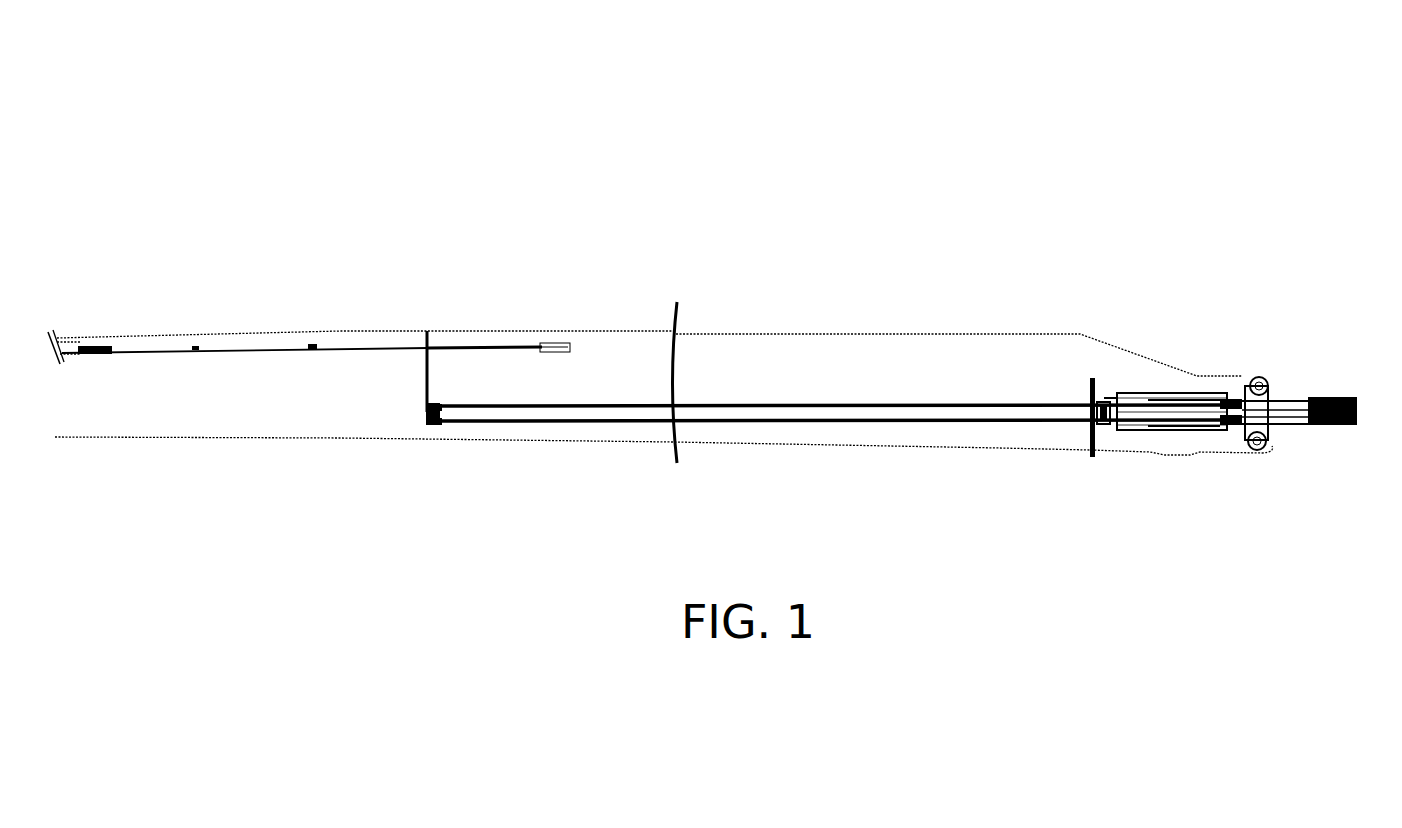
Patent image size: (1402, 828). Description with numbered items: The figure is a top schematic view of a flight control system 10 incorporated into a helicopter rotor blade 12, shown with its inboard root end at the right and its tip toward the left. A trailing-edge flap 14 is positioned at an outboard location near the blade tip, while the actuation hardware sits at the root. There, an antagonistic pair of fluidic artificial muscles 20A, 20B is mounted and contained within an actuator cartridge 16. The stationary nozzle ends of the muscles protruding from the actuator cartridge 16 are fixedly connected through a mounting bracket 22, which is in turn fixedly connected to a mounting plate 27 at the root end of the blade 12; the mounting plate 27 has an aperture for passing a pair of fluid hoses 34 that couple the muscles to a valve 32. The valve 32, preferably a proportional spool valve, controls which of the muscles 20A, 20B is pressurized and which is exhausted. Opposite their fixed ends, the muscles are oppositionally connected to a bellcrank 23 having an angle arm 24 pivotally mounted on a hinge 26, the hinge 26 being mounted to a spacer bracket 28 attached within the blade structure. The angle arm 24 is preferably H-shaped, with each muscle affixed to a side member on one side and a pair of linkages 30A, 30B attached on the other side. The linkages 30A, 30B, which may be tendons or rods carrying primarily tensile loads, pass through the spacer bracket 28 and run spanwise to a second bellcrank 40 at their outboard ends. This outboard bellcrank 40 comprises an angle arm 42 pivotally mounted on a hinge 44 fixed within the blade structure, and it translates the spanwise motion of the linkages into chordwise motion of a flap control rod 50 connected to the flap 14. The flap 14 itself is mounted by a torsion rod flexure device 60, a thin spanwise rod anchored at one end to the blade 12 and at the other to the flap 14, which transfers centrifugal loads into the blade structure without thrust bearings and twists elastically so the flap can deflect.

The flight control system 10 is at (584, 258).
The rotor blade 12 is at (900, 333).
The trailing-edge flap 14 is at (331, 330).
The actuator cartridge 16 is at (1138, 432).
The fluidic artificial muscle 20A is at (1148, 398).
The fluidic artificial muscle 20B is at (1193, 432).
The mounting bracket 22 is at (1238, 398).
The bellcrank 23 is at (1116, 388).
The angle arm 24 is at (1107, 458).
The hinge 26 is at (1093, 447).
The mounting plate 27 is at (1262, 449).
The spacer bracket 28 is at (1089, 430).
The linkage 30A is at (1008, 403).
The linkage 30B is at (1010, 423).
The valve 32 is at (1331, 396).
The fluid hoses 34 is at (1294, 427).
The second bellcrank 40 is at (442, 444).
The angle arm 42 is at (438, 400).
The hinge 44 is at (427, 415).
The flap control rod 50 is at (427, 375).
The torsion rod flexure mounting device 60 is at (512, 345).